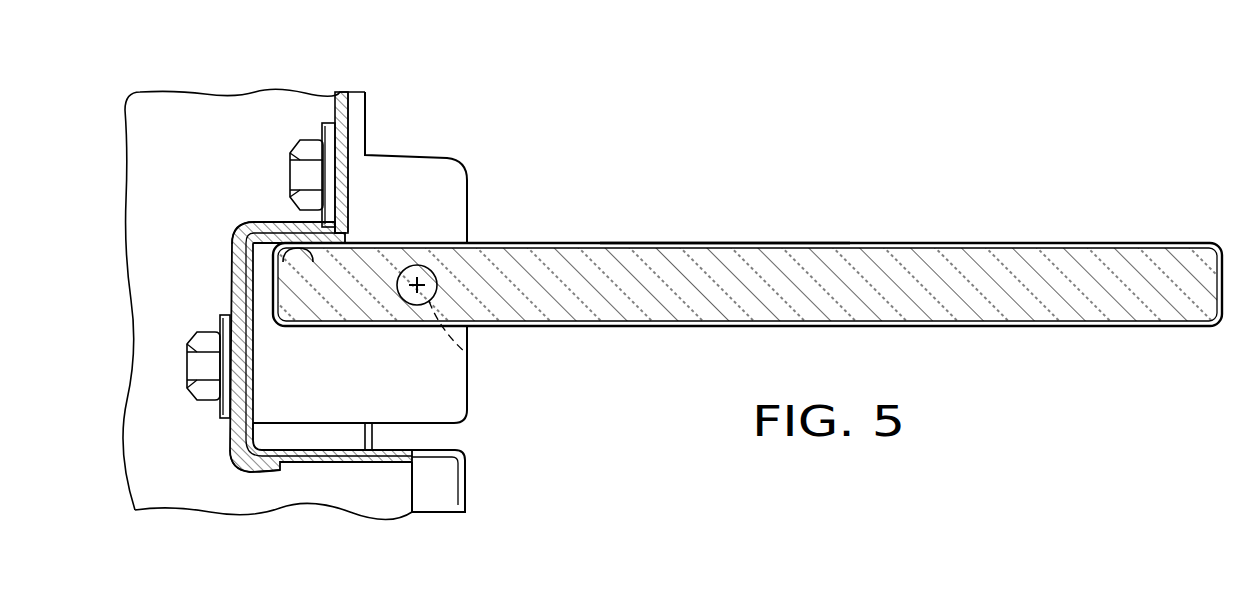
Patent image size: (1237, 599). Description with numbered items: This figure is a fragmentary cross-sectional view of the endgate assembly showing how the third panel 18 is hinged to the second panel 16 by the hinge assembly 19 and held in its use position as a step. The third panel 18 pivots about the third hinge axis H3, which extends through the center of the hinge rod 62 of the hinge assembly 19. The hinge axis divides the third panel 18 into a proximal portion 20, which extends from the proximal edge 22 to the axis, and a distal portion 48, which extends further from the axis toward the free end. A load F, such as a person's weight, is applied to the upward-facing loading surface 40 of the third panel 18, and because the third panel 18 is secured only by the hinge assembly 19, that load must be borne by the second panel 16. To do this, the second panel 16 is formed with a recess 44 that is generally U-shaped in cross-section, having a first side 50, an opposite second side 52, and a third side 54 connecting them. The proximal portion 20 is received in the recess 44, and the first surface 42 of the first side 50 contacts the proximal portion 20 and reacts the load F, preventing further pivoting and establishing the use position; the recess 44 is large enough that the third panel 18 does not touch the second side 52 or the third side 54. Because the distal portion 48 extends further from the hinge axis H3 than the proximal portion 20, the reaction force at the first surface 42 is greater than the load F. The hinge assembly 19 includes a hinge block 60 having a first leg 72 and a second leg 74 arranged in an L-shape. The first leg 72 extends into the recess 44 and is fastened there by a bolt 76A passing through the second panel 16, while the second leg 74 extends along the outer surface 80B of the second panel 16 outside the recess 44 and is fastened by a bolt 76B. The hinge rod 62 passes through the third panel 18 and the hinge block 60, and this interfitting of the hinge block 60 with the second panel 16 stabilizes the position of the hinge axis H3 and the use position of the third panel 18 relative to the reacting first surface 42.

The second panel 16 is at (350, 92).
The third panel 18 is at (938, 258).
The hinge assembly 19 is at (505, 76).
The proximal portion 20 is at (402, 242).
The proximal edge 22 is at (270, 293).
The loading surface 40 is at (1030, 235).
The first surface 42 is at (312, 262).
The recess 44 is at (278, 437).
The distal portion 48 is at (722, 241).
The first side 50 is at (263, 262).
The second side 52 is at (336, 454).
The third side 54 is at (257, 375).
The hinge block 60 is at (430, 373).
The hinge rod 62 is at (420, 280).
The first leg 72 is at (288, 380).
The second leg 74 is at (468, 182).
The bolt 76A is at (187, 368).
The bolt 76B is at (290, 175).
The outer surface 80B is at (362, 195).
The load F is at (1130, 235).
The third hinge axis H3 is at (466, 354).